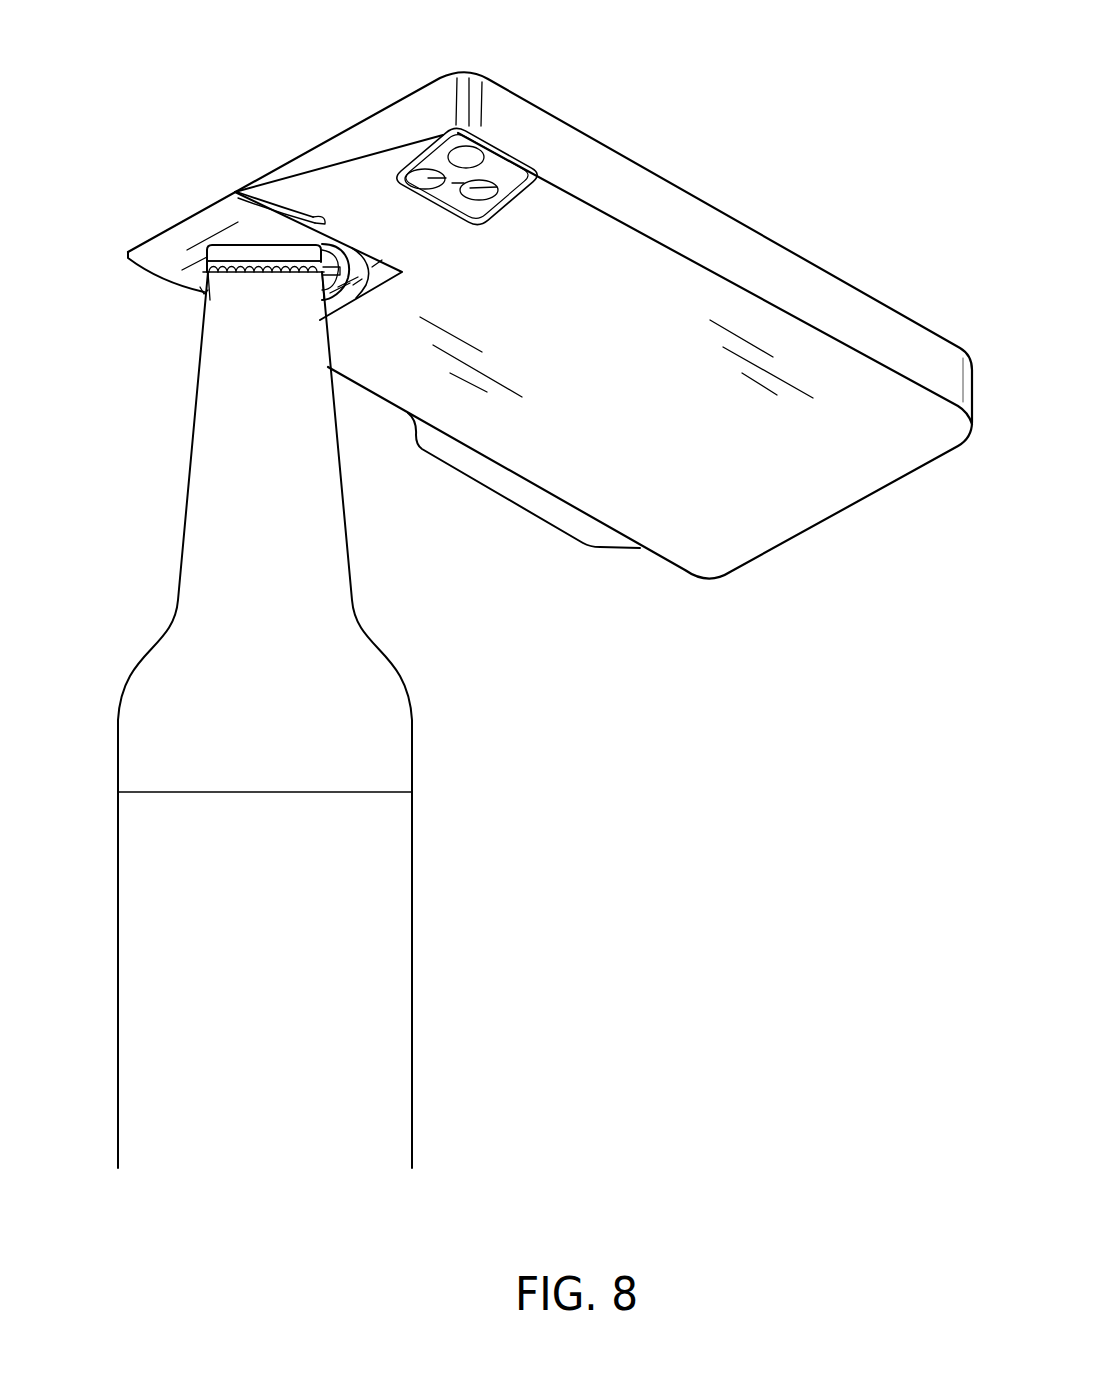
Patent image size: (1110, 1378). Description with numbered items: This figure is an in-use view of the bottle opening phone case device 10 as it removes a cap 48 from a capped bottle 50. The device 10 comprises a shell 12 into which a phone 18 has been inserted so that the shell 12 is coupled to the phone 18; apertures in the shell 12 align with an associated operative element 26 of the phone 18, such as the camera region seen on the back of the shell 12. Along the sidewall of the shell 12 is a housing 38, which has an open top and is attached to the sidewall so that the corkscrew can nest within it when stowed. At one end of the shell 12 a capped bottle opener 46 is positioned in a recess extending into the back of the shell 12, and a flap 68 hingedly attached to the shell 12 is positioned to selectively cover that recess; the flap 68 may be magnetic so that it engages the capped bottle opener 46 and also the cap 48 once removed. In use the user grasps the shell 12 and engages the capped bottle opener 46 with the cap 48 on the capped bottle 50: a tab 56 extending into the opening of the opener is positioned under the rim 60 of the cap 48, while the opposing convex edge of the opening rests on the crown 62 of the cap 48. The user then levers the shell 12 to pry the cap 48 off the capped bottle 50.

The bottle opening phone case device 10 is at (703, 643).
The shell 12 is at (717, 237).
The phone 18 is at (718, 367).
The operative element 26 is at (497, 177).
The housing 38 is at (507, 487).
The capped bottle opener 46 is at (368, 257).
The cap 48 is at (211, 250).
The capped bottle 50 is at (182, 552).
The tab 56 is at (323, 273).
The rim 60 is at (257, 272).
The crown 62 is at (258, 262).
The flap 68 is at (187, 227).